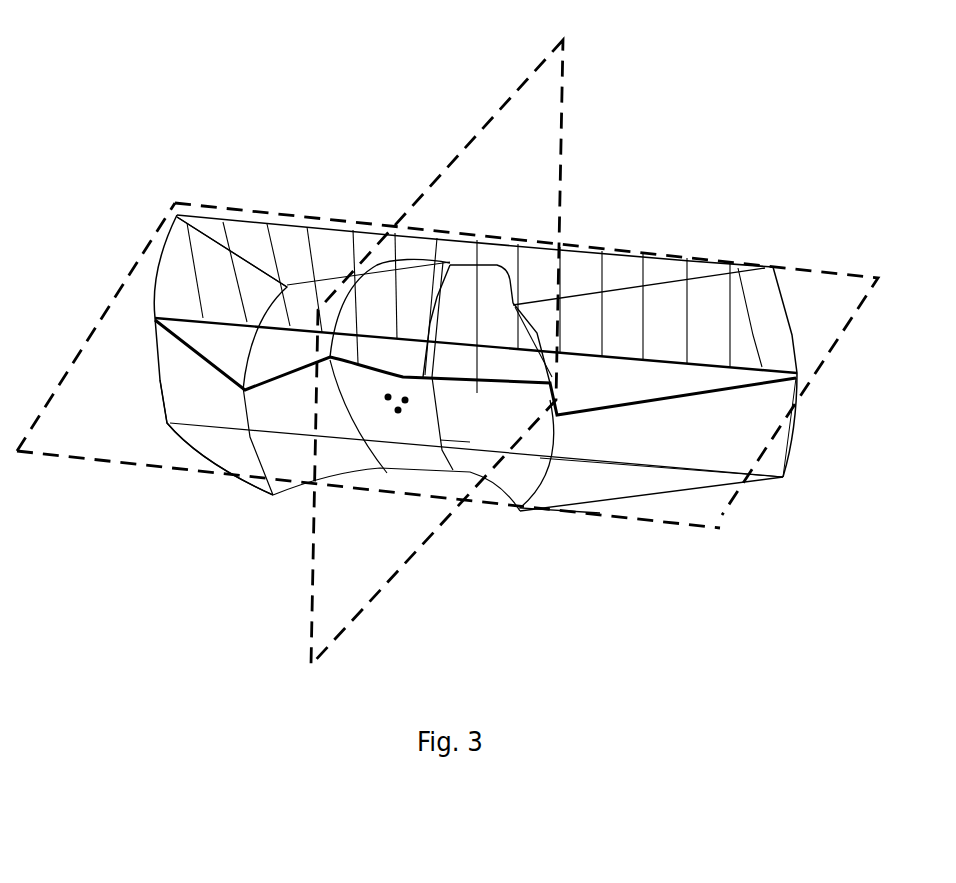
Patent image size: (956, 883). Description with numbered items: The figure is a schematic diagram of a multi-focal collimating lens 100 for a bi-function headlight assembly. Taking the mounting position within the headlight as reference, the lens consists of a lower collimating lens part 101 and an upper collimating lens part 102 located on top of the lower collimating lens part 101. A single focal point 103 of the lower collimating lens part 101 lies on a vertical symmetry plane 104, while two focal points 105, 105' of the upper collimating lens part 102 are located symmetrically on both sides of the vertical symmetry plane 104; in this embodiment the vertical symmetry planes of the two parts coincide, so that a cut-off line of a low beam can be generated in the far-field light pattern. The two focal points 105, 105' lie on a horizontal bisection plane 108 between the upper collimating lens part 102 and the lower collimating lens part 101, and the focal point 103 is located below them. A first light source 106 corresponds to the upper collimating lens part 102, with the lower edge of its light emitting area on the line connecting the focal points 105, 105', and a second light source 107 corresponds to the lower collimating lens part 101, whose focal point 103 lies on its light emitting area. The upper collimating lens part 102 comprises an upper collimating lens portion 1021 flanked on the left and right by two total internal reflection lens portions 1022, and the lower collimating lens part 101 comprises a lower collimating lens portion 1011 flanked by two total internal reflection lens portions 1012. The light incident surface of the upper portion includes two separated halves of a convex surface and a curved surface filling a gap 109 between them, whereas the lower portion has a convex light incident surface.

The multi-focal collimating lens 100 is at (135, 158).
The lower collimating lens part 101 is at (218, 442).
The upper collimating lens part 102 is at (183, 298).
The upper collimating lens portion 1021 is at (408, 298).
The total internal reflection lens portions 1022 is at (230, 277).
The focal point 103 is at (398, 412).
The vertical symmetry plane 104 is at (313, 590).
The focal point 105 is at (329, 478).
The focal point 105' is at (462, 480).
The first light source 106 is at (403, 393).
The second light source 107 is at (405, 402).
The horizontal bisection plane 108 is at (722, 513).
The gap 109 is at (438, 297).
The lower collimating lens portion 1011 is at (470, 442).
The total internal reflection lens portions 1012 is at (595, 440).